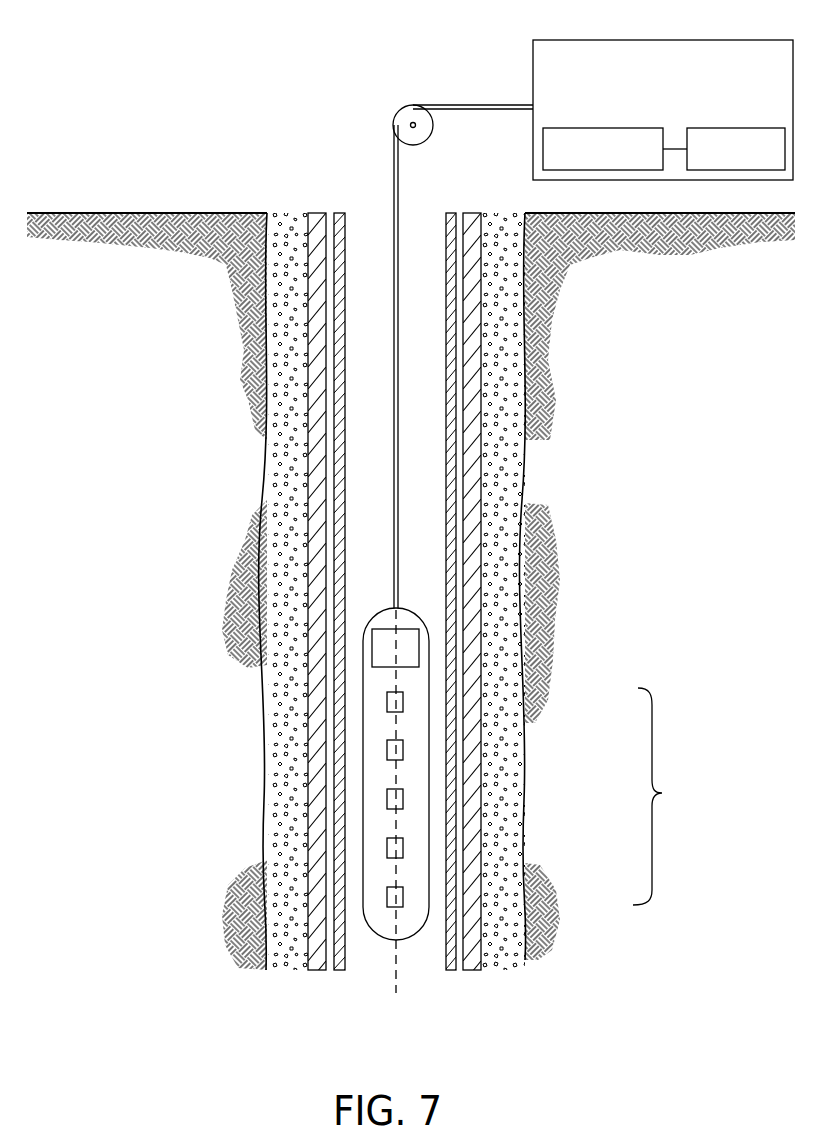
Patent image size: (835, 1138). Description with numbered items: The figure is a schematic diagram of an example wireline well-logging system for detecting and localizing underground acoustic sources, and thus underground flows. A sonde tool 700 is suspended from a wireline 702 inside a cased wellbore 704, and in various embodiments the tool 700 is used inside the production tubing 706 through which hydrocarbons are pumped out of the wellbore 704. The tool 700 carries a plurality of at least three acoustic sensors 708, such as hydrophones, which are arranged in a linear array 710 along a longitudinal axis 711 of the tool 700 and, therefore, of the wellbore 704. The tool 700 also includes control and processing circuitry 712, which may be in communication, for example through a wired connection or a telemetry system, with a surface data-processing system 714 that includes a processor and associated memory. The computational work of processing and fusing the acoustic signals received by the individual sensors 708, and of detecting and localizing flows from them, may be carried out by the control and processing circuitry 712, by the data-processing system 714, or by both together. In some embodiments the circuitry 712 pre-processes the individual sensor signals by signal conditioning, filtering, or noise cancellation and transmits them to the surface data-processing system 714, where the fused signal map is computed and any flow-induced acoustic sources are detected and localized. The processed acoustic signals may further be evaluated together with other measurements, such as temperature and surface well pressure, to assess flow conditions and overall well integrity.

The sonde tool 700 is at (427, 613).
The wireline 702 is at (397, 333).
The cased wellbore 704 is at (328, 199).
The production tubing 706 is at (457, 490).
The acoustic sensors 708 is at (403, 702).
The linear array 710 is at (671, 796).
The longitudinal axis 711 is at (396, 993).
The control and processing circuitry 712 is at (419, 660).
The surface data-processing system 714 is at (655, 40).